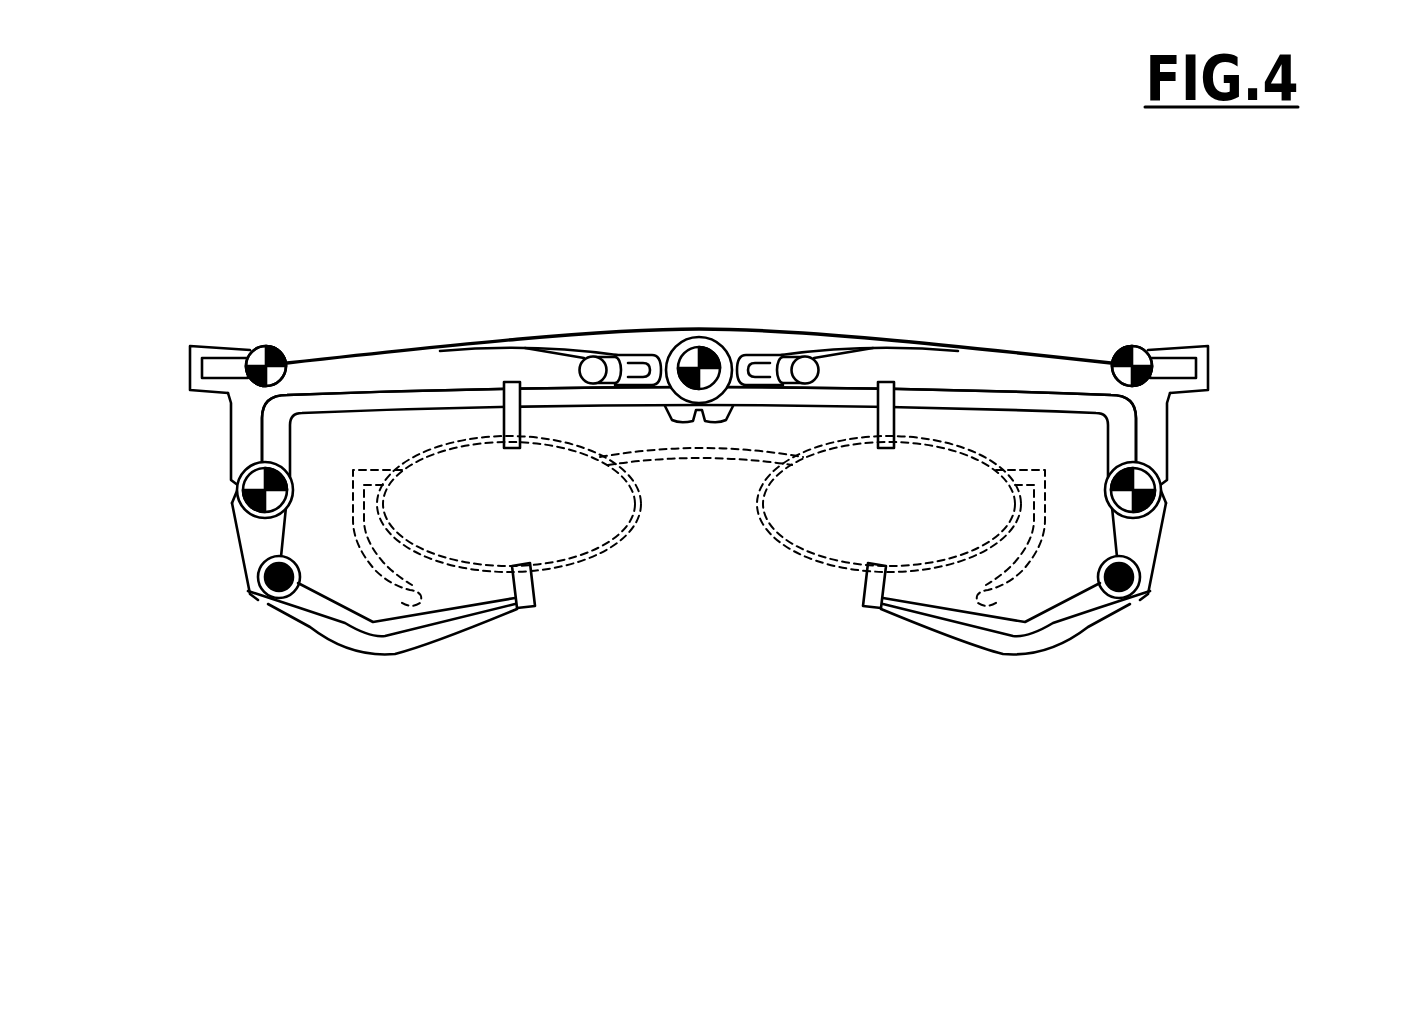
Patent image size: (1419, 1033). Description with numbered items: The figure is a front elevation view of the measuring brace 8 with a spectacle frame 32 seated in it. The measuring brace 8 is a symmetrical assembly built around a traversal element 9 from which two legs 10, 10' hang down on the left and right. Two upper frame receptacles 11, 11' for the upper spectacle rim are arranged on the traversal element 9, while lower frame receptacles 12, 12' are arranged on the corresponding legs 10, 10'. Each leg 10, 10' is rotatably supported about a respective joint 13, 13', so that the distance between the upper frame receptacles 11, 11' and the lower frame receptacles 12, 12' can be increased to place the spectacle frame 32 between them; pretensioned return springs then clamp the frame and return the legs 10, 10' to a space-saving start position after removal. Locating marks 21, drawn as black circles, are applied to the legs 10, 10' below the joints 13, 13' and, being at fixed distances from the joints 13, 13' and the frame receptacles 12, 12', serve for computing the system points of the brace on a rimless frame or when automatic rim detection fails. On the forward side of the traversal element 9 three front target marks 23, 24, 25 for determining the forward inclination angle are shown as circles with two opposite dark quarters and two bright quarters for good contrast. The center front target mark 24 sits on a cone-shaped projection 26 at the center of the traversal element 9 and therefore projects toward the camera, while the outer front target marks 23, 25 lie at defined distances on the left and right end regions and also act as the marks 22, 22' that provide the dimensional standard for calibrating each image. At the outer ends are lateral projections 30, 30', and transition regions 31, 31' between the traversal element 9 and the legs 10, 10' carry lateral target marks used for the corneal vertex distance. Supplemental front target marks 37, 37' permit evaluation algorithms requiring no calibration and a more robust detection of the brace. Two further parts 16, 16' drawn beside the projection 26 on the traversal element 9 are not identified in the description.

The measuring brace 8 is at (931, 241).
The traversal element 9 is at (1015, 400).
The leg 10 is at (371, 706).
The leg 10' is at (1015, 697).
The upper frame receptacle 11 is at (482, 305).
The upper frame receptacle 11' is at (965, 305).
The lower frame receptacle 12 is at (539, 667).
The lower frame receptacle 12' is at (836, 666).
The joint 13 is at (170, 551).
The joint 13' is at (1245, 551).
The guide roller 16 is at (612, 273).
The guide roller 16' is at (831, 273).
The locating mark 21 is at (260, 604).
The mark 22 is at (226, 274).
The mark 22' is at (1215, 319).
The front target mark 23 is at (288, 348).
The center front target mark 24 is at (730, 334).
The front target mark 25 is at (1146, 346).
The cone-shaped projection 26 is at (671, 340).
The lateral projection 30 is at (152, 362).
The lateral projection 30' is at (1271, 367).
The transition region 31 is at (148, 448).
The transition region 31' is at (1274, 448).
The spectacle frame 32 is at (618, 562).
The supplemental front target mark 37 is at (174, 493).
The supplemental front target mark 37' is at (1242, 500).